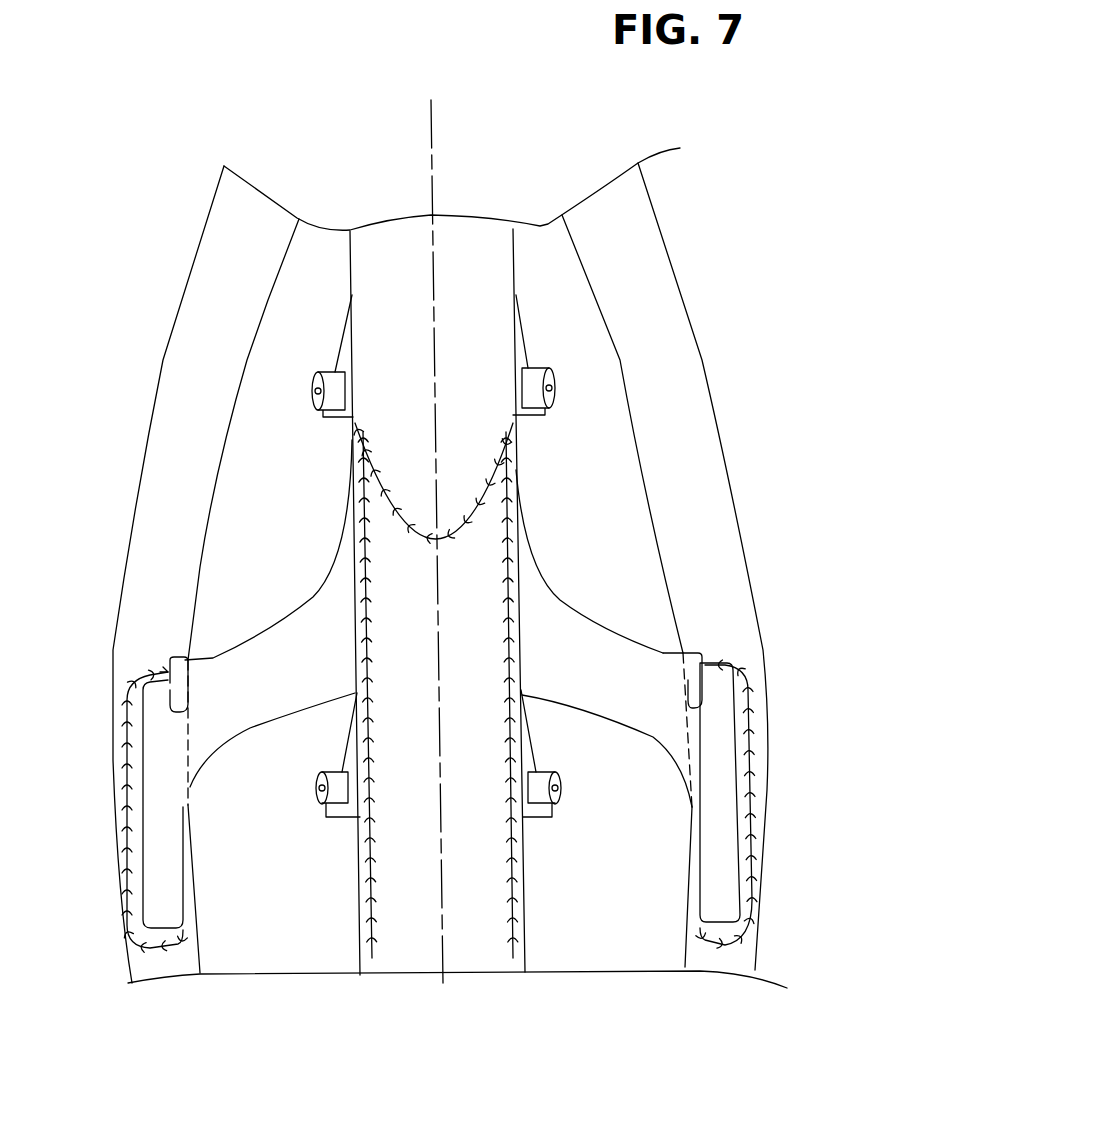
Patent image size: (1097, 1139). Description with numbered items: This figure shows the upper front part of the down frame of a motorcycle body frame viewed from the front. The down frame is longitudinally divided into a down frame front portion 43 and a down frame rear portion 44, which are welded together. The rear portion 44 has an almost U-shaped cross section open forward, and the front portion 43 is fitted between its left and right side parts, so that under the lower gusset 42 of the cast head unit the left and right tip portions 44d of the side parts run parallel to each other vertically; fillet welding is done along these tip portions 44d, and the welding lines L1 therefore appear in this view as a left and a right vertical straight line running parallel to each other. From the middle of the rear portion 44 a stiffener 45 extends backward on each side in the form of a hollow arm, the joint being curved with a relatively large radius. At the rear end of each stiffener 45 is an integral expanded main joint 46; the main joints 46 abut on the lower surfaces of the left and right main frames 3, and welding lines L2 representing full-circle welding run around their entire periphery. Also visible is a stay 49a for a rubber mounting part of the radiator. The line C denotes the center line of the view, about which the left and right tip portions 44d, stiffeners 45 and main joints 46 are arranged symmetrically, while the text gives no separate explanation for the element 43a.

The main frame 3 is at (210, 257).
The lower gusset 42 is at (475, 242).
The down frame front portion 43 is at (457, 1023).
The bottom edge 43a is at (468, 960).
The down frame rear portion 44 is at (433, 533).
The front end of side part 44d is at (352, 490).
The stiffener 45 is at (258, 657).
The main joint 46 is at (128, 726).
The stay 49a is at (317, 390).
The welding line L1 is at (360, 560).
The welding line L2 is at (122, 808).
The center line C is at (432, 527).